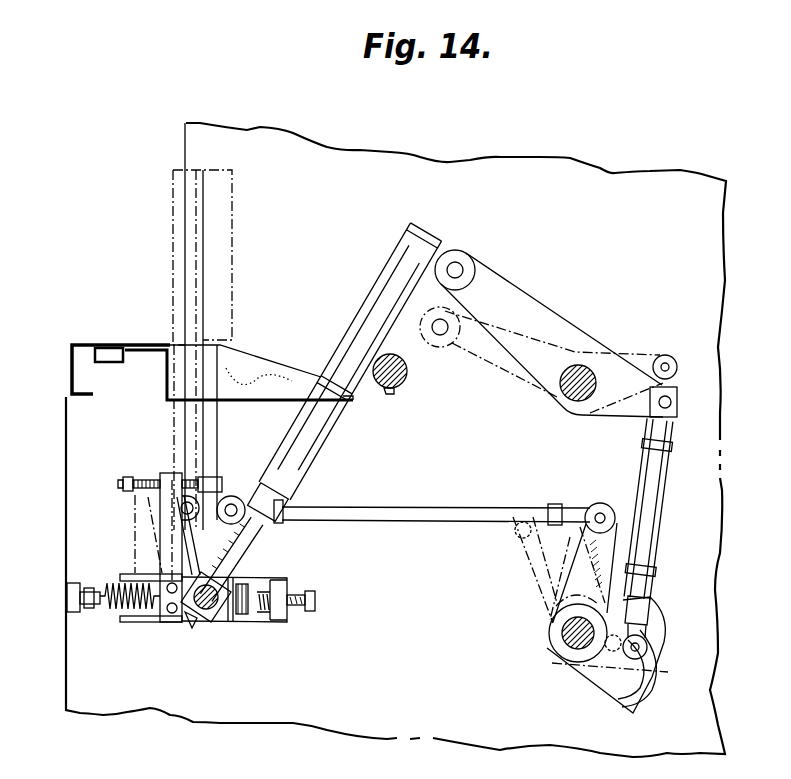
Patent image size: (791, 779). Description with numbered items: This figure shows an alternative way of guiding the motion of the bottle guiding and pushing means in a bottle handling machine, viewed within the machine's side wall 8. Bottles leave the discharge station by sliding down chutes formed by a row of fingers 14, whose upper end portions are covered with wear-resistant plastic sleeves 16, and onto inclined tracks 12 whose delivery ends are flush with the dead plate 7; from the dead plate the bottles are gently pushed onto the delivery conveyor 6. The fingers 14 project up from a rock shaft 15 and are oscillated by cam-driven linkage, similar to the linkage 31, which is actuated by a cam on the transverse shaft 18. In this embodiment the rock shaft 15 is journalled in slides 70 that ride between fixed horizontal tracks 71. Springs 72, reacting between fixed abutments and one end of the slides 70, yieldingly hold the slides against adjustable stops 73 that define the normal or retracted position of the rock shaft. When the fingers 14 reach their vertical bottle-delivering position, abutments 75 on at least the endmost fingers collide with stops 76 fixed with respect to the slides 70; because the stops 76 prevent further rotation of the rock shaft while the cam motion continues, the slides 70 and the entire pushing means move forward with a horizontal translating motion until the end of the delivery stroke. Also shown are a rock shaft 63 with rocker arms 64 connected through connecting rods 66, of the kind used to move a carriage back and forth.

The side wall 8 is at (338, 162).
The delivery conveyor 6 is at (113, 342).
The dead plate 7 is at (153, 342).
The track 12 is at (258, 364).
The finger 14 is at (371, 290).
The sleeve 16 is at (402, 251).
The shaft 18 is at (404, 380).
The motion-transmitting linkage 31 is at (449, 556).
The rock shaft 63 is at (560, 638).
The rocker arm 64 is at (580, 573).
The connecting rod 66 is at (620, 470).
The slide 70 is at (250, 590).
The fixed horizontal track 71 is at (130, 575).
The spring 72 is at (120, 612).
The adjustable stop 73 is at (292, 598).
The abutment 75 is at (258, 490).
The stop 76 is at (197, 477).
The rock shaft 15 is at (222, 618).